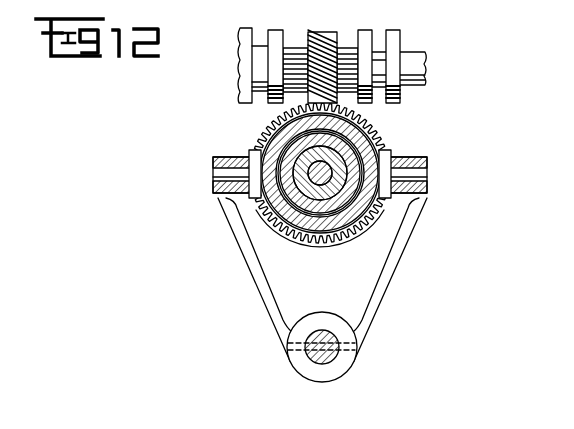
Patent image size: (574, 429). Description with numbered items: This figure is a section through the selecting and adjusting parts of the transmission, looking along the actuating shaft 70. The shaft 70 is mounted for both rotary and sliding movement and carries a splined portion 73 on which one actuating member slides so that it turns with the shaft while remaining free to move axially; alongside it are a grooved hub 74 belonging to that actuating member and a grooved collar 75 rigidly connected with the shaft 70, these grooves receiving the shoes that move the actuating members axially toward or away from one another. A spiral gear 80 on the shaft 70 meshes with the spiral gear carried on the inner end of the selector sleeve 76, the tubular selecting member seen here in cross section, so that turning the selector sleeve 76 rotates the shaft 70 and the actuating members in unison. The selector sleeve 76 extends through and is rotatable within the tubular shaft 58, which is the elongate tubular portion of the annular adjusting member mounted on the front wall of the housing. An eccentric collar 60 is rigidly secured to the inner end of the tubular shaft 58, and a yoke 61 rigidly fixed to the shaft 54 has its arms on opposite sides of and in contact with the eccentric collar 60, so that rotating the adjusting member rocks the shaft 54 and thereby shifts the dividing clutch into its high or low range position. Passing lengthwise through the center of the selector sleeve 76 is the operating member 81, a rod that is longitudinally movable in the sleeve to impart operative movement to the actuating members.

The shaft 54 is at (335, 356).
The tubular shaft 58 is at (336, 242).
The eccentric collar 60 is at (317, 228).
The yoke 61 is at (358, 305).
The shaft 70 is at (410, 60).
The splined portion 73 is at (347, 52).
The grooved hub 74 is at (270, 105).
The grooved collar 75 is at (393, 104).
The selector sleeve 76 is at (302, 237).
The spiral gear 80 is at (325, 33).
The operating member 81 is at (373, 146).